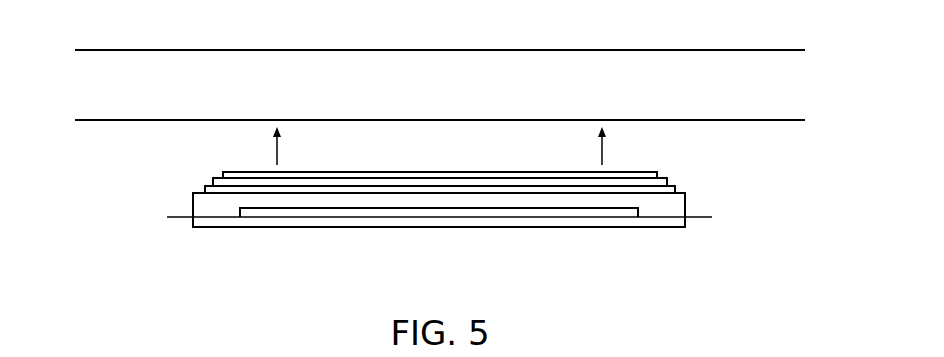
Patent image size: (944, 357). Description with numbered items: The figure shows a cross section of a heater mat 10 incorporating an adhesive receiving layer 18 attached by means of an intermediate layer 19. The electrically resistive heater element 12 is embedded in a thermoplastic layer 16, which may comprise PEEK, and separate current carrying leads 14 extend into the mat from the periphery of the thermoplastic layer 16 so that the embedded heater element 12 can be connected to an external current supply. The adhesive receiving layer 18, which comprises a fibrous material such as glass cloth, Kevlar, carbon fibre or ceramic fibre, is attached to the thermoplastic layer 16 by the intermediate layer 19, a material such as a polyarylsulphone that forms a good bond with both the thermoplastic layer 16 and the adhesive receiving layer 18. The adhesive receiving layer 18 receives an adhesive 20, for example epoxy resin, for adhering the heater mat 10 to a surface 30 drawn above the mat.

The heater mat 10 is at (441, 221).
The electrically resistive heater element 12 is at (293, 210).
The current carrying leads 14 is at (178, 218).
The thermoplastic layer 16 is at (228, 208).
The adhesive receiving layer 18 is at (213, 181).
The intermediate layer 19 is at (206, 188).
The adhesive 20 is at (224, 174).
The surface 30 is at (704, 76).